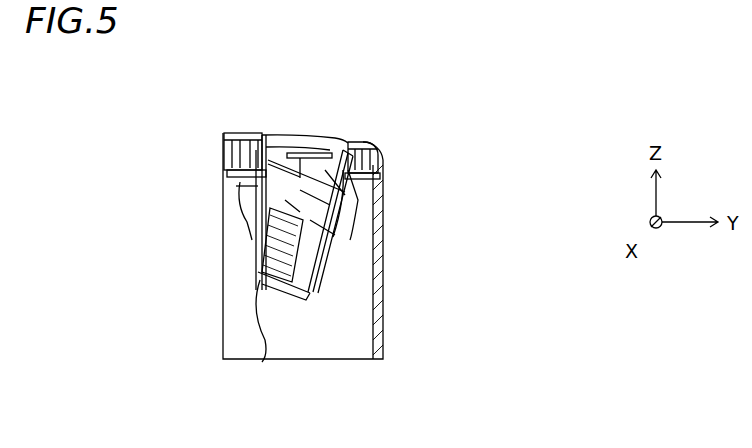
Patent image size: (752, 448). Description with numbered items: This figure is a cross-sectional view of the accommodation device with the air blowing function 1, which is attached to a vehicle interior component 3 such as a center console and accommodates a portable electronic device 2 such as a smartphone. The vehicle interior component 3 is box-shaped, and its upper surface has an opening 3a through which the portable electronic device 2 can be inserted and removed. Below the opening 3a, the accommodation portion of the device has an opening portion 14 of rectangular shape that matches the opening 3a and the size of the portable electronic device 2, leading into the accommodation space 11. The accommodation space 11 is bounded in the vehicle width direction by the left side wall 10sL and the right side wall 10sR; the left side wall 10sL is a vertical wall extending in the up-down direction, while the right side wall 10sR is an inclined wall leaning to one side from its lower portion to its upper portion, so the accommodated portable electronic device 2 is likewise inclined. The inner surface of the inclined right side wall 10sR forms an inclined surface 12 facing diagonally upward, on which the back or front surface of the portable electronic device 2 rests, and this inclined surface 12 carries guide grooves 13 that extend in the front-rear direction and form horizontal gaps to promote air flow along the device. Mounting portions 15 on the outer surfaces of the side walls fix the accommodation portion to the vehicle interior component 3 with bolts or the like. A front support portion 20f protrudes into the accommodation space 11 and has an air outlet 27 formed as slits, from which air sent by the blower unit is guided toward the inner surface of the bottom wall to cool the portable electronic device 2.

The accommodation device with the air blowing function 1 is at (257, 263).
The portable electronic device 2 is at (347, 143).
The vehicle interior component 3 is at (226, 134).
The opening 3a is at (265, 140).
The left side wall 10sL is at (250, 210).
The right side wall 10sR is at (348, 200).
The accommodation space 11 is at (304, 160).
The inclined surface 12 is at (334, 150).
The guide groove 13 is at (313, 275).
The opening portion 14 is at (280, 140).
The mounting portion 15 is at (227, 174).
The front support portion 20f is at (343, 228).
The air outlet 27 is at (262, 362).